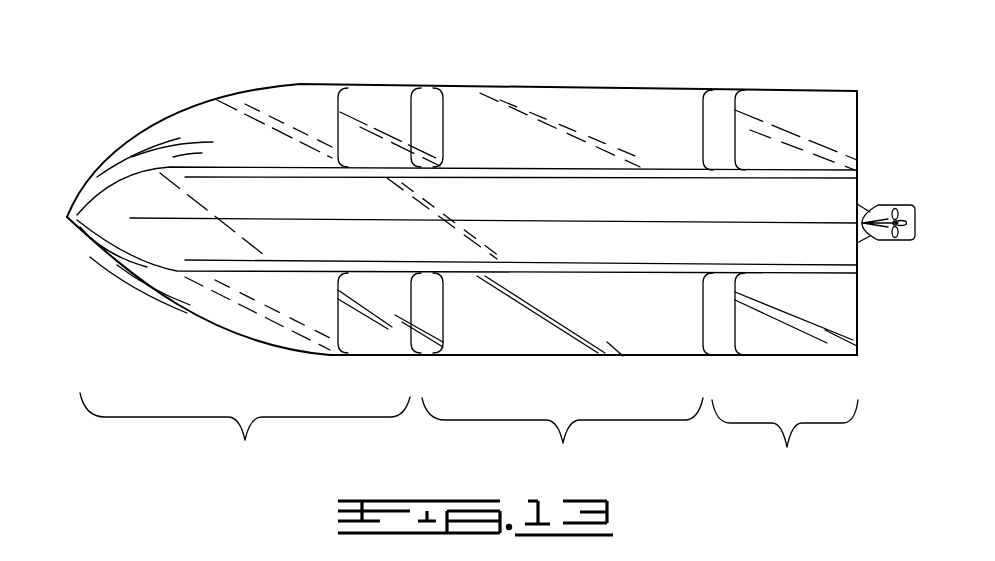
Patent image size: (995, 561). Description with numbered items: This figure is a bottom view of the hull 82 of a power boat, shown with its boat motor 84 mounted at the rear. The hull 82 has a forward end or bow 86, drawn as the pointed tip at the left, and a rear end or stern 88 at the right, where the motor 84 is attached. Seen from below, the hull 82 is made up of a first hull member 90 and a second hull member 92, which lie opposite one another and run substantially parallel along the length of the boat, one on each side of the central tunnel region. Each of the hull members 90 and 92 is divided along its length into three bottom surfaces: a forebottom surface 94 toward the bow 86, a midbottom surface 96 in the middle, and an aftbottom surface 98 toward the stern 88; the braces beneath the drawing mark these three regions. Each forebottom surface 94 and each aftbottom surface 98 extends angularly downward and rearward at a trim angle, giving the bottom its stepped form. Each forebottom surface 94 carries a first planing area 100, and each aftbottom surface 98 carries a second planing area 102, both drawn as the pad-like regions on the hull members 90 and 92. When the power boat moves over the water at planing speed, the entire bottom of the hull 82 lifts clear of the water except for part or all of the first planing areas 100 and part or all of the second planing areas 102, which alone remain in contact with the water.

The hull 82 is at (153, 73).
The boat motor 84 is at (887, 240).
The bow 86 is at (66, 217).
The stern 88 is at (857, 137).
The first hull member 90 is at (577, 86).
The second hull member 92 is at (577, 356).
The forebottom surface 94 is at (245, 432).
The midbottom surface 96 is at (562, 436).
The aftbottom surface 98 is at (785, 437).
The first planing area 100 is at (365, 117).
The second planing area 102 is at (798, 120).